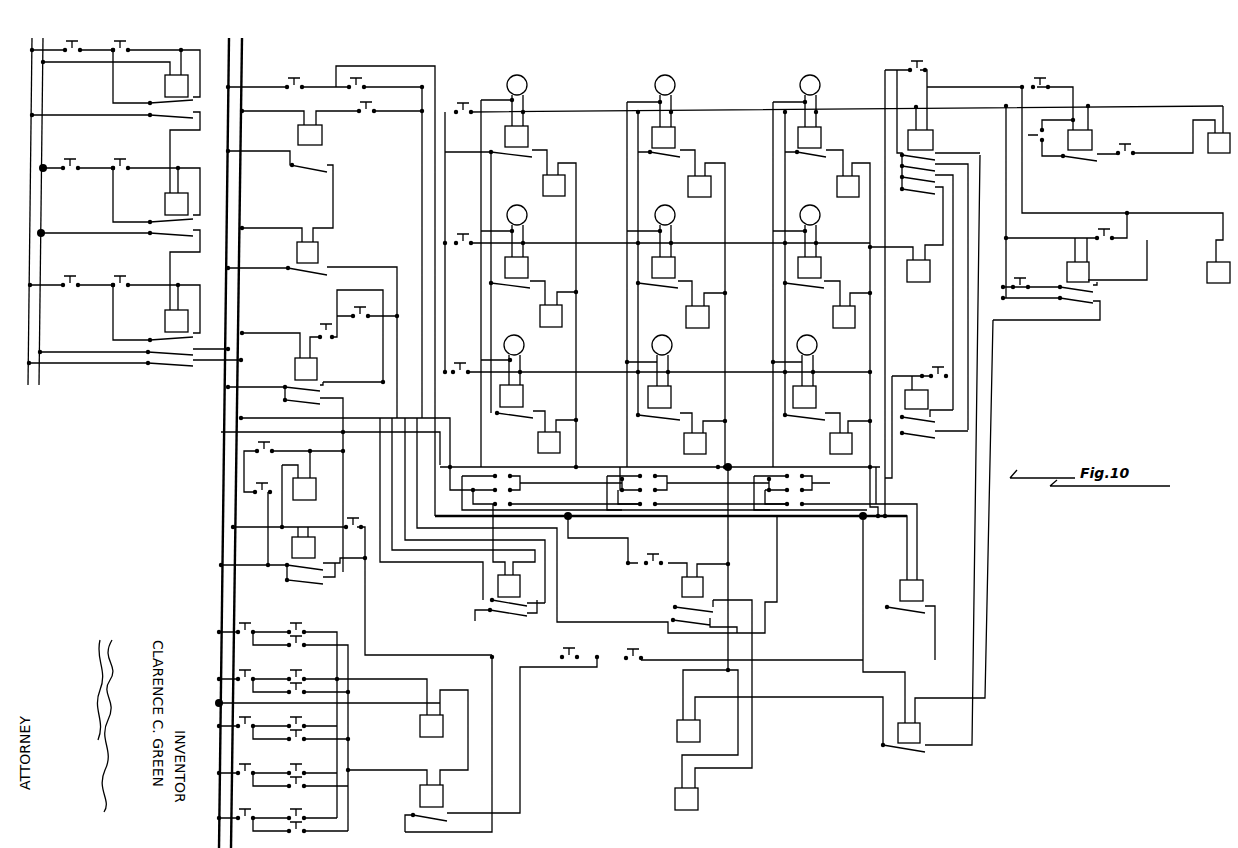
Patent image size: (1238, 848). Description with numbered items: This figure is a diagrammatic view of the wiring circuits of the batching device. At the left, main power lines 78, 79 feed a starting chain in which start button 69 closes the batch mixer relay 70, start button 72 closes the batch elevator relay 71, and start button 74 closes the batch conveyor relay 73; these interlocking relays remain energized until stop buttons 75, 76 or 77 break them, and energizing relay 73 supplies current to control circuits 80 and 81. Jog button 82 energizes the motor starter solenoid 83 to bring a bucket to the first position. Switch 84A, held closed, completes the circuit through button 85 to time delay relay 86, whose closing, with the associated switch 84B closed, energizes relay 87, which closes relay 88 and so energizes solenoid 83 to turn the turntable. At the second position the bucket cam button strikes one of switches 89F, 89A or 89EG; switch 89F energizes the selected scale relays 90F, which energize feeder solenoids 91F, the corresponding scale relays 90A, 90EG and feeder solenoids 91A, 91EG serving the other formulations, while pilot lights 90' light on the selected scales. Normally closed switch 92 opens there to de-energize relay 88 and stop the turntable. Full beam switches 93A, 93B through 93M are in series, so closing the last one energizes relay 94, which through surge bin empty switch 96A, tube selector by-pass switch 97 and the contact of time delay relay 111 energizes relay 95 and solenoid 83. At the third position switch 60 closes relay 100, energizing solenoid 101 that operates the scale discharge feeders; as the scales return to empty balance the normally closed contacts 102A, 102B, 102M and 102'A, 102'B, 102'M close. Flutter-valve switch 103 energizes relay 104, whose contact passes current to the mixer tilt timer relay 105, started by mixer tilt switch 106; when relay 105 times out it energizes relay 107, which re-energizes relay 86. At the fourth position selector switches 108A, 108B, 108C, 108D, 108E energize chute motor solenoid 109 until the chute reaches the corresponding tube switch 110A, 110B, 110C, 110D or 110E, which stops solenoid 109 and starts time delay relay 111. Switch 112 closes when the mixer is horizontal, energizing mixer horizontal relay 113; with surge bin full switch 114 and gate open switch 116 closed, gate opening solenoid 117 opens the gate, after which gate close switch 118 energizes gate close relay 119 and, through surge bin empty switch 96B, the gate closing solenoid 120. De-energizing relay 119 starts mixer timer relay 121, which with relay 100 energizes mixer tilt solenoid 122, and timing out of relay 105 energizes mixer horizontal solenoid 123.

The switch 60 is at (925, 60).
The start button 69 is at (130, 40).
The batch mixer relay 70 is at (167, 86).
The batch elevator relay 71 is at (167, 204).
The start button 72 is at (121, 158).
The batch conveyor relay 73 is at (167, 321).
The start button 74 is at (121, 275).
The stop button 75 is at (72, 40).
The stop button 76 is at (70, 158).
The stop button 77 is at (70, 275).
The main power line 78 is at (38, 205).
The main power line 79 is at (51, 211).
The control circuit 80 is at (216, 443).
The control circuit 81 is at (246, 443).
The jog button 82 is at (261, 479).
The motor starter solenoid 83 is at (315, 489).
The manually operated switch 84A is at (369, 77).
The switch 84B is at (361, 308).
The button 85 is at (371, 102).
The time delay relay 86 is at (299, 135).
The relay 87 is at (296, 253).
The relay 88 is at (294, 369).
The switch 89F is at (460, 100).
The switch 89A is at (458, 232).
The switch 89EG is at (458, 355).
The pilot light 90' is at (674, 206).
The scale relay 90F is at (677, 137).
The relay 90A is at (678, 267).
The relay 90EG is at (678, 396).
The feeder solenoid 91F is at (686, 186).
The relay 91A is at (683, 316).
The relay 91EG is at (675, 443).
The switch 92 is at (316, 325).
The full beam switch 93A is at (534, 495).
The full beam switch 93B is at (681, 500).
The full beam switch 93M is at (750, 498).
The relay 94 is at (900, 590).
The relay 95 is at (292, 547).
The surge bin empty switch 96A is at (642, 647).
The surge bin empty switch 96B is at (1025, 274).
The tube selector by-pass switch 97 is at (575, 647).
The relay 100 is at (935, 140).
The solenoid 101 is at (933, 271).
The normally closed contact 102A is at (551, 480).
The normally closed contact 102B is at (697, 481).
The normally closed contact 102M is at (835, 516).
The normally closed contact 102'A is at (590, 486).
The normally closed contact 102'B is at (720, 485).
The normally closed contact 102'M is at (843, 492).
The turntable dump switch 103 is at (937, 362).
The relay 104 is at (908, 378).
The mixer tilt timer relay 105 is at (679, 587).
The mixer tilt switch 106 is at (653, 552).
The relay 107 is at (488, 586).
The selector switch 108A is at (255, 622).
The selector switch 108B is at (256, 669).
The selector switch 108C is at (255, 716).
The selector switch 108D is at (257, 763).
The selector switch 108E is at (256, 808).
The chute motor starter solenoid 109 is at (418, 726).
The switch 110A is at (308, 629).
The switch 110B is at (309, 676).
The storage tube switch 110C is at (308, 723).
The switch 110D is at (310, 770).
The switch 110E is at (308, 815).
The time delay relay 111 is at (422, 796).
The switch 112 is at (1049, 77).
The mixer horizontal relay 113 is at (1094, 140).
The surge bin full switch 114 is at (1037, 167).
The surge bin gate open switch 116 is at (1123, 160).
The gate opening motor solenoid 117 is at (1215, 152).
The gate close switch 118 is at (1093, 229).
The gate close relay 119 is at (1092, 272).
The gate closing motor solenoid 120 is at (1204, 272).
The mixer timer relay 121 is at (924, 733).
The mixer tilt motor solenoid 122 is at (703, 731).
The mixer horizontal motor solenoid 123 is at (701, 799).